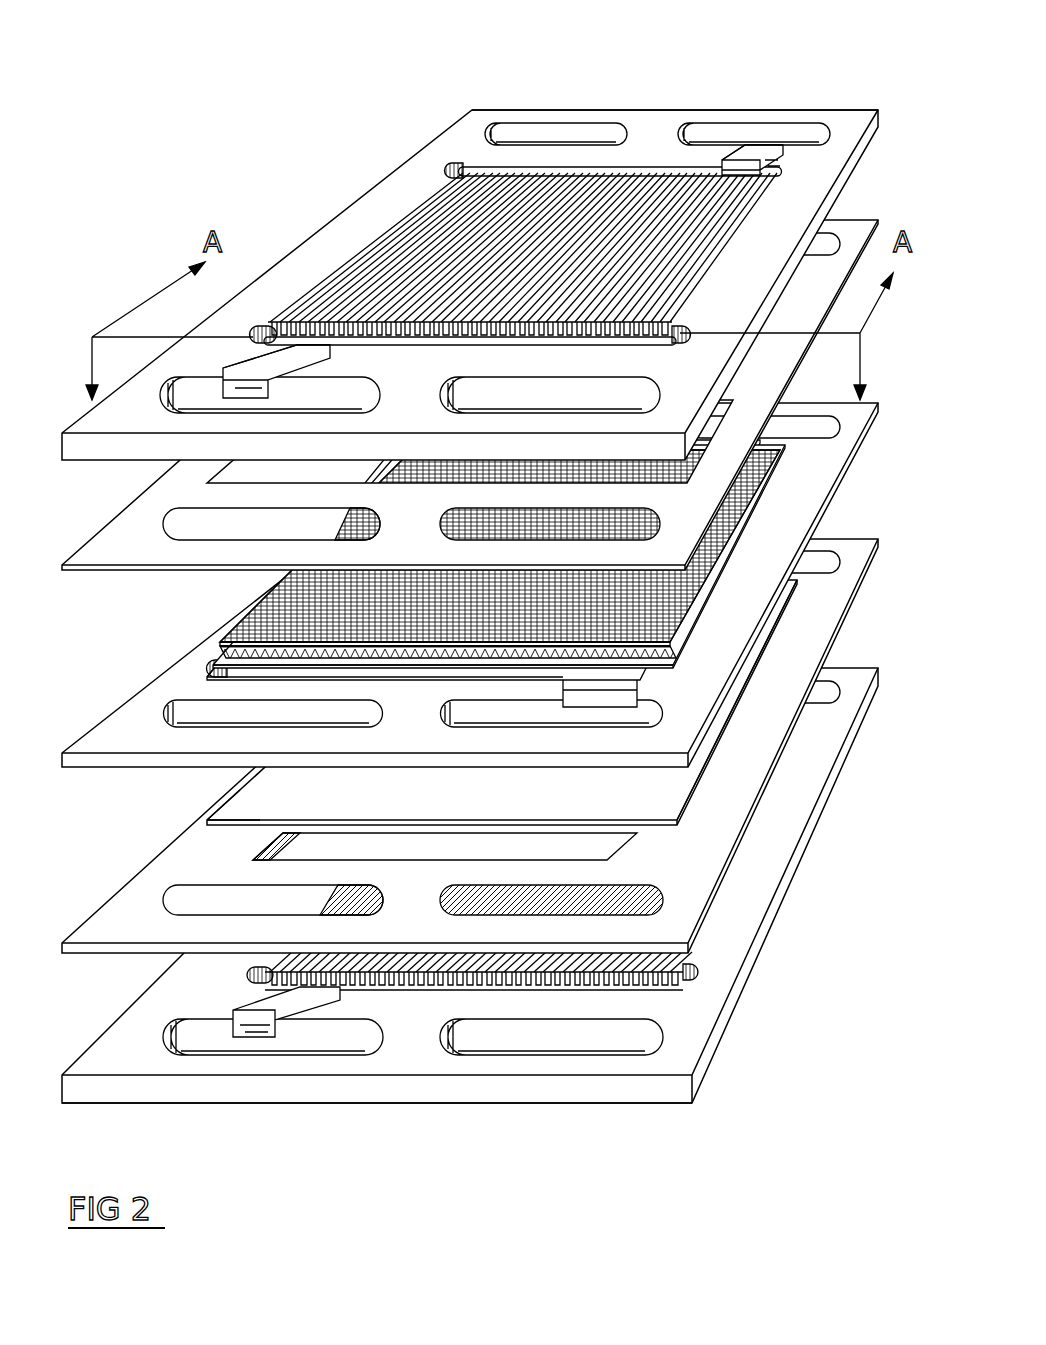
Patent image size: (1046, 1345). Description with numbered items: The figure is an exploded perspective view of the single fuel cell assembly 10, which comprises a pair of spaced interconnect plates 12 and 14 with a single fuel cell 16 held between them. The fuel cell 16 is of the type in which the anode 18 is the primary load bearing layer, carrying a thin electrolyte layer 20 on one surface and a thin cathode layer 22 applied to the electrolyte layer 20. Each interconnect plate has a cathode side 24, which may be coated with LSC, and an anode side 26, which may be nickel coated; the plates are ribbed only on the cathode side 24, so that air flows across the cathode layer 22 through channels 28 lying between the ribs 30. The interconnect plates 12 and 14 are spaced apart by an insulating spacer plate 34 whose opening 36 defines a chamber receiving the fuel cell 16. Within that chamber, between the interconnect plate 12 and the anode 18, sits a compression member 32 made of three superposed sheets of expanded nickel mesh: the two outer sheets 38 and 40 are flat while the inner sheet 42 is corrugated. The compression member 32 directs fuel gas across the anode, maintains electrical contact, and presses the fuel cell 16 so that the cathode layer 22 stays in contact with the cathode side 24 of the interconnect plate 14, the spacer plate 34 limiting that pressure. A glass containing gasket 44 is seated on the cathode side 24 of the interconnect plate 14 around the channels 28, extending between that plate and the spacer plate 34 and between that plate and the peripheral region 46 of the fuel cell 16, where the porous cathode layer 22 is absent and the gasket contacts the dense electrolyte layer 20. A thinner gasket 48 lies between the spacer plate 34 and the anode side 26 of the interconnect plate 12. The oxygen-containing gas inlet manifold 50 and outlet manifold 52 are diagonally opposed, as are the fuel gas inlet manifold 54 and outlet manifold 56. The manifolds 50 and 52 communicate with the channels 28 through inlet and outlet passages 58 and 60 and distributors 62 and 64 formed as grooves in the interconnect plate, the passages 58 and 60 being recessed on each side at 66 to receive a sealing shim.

The fuel cell assembly 10 is at (250, 118).
The interconnect plate 12 is at (872, 122).
The interconnect plate 14 is at (715, 1043).
The fuel cell 16 is at (700, 780).
The anode 18 is at (275, 795).
The electrolyte layer 20 is at (232, 840).
The cathode layer 22 is at (350, 832).
The cathode side 24 is at (656, 120).
The anode side 26 is at (588, 1104).
The channels 28 is at (320, 330).
The ribs 30 is at (662, 302).
The compression member 32 is at (220, 655).
The insulating spacer plate 34 is at (843, 482).
The opening 36 is at (775, 497).
The outer sheet 38 is at (265, 600).
The outer sheet 40 is at (210, 670).
The inner sheet 42 is at (435, 658).
The gasket 44 is at (120, 888).
The peripheral region 46 is at (210, 823).
The gasket 48 is at (130, 510).
The oxygen-containing gas inlet manifold 50 is at (752, 130).
The oxygen-containing gas outlet manifold 52 is at (178, 400).
The fuel gas inlet manifold 54 is at (568, 128).
The fuel gas outlet manifold 56 is at (457, 402).
The inlet passage 58 is at (762, 160).
The outlet passage 60 is at (290, 372).
The distributor 62 is at (497, 168).
The distributor 64 is at (622, 340).
The recess 66 is at (262, 378).